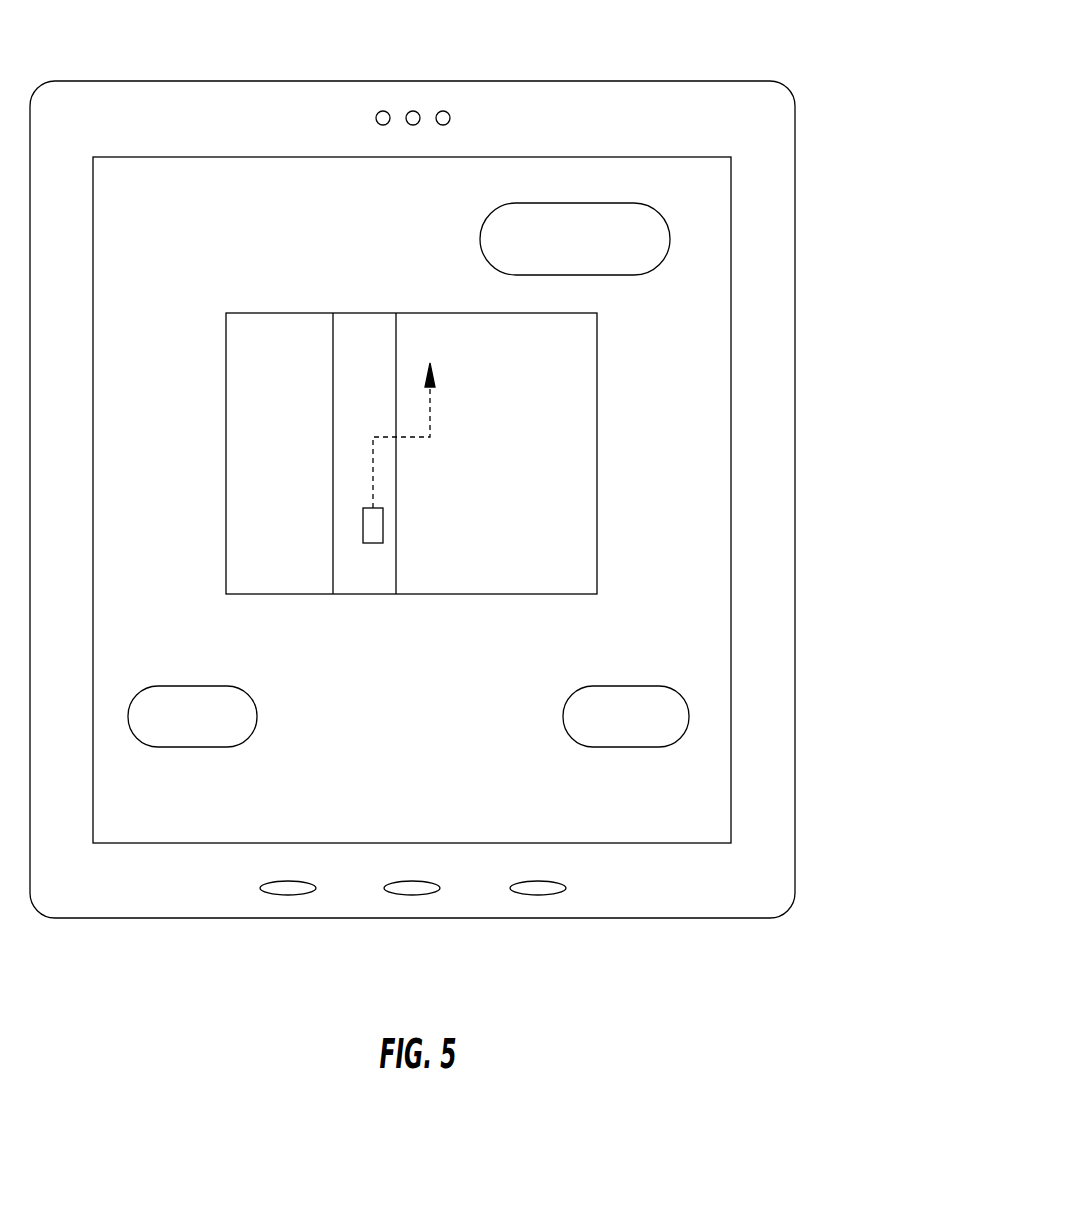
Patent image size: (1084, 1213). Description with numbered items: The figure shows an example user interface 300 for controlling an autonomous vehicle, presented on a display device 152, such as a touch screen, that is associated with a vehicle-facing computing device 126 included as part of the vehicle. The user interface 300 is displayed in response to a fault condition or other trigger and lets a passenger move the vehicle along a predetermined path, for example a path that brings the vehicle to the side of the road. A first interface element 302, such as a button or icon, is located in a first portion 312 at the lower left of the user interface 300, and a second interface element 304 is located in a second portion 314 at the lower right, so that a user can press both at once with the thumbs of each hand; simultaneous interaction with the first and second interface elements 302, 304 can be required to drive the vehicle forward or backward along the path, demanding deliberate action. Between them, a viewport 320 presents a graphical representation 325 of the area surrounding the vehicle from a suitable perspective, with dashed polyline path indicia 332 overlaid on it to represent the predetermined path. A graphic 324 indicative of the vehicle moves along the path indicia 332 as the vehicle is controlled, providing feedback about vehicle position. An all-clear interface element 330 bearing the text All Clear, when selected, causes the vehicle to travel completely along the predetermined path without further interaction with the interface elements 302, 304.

The vehicle-facing computing device 126 is at (690, 80).
The display device 152 is at (732, 190).
The user interface 300 is at (705, 335).
The first interface element 302 is at (190, 748).
The second interface element 304 is at (627, 748).
The first portion 312 is at (203, 657).
The second portion 314 is at (623, 653).
The viewport 320 is at (265, 312).
The graphic indicative of the vehicle 324 is at (384, 527).
The graphical representation 325 is at (248, 413).
The all-clear interface element 330 is at (480, 243).
The travel path 332 is at (430, 415).